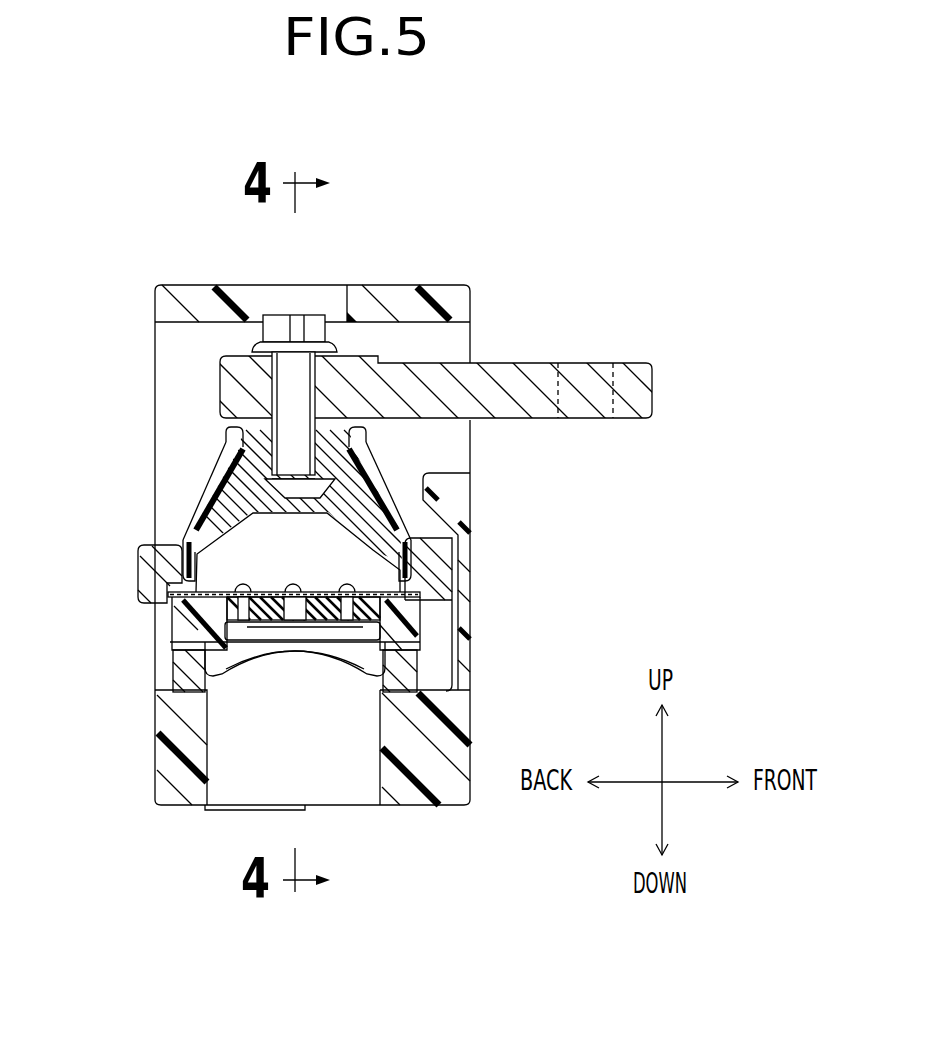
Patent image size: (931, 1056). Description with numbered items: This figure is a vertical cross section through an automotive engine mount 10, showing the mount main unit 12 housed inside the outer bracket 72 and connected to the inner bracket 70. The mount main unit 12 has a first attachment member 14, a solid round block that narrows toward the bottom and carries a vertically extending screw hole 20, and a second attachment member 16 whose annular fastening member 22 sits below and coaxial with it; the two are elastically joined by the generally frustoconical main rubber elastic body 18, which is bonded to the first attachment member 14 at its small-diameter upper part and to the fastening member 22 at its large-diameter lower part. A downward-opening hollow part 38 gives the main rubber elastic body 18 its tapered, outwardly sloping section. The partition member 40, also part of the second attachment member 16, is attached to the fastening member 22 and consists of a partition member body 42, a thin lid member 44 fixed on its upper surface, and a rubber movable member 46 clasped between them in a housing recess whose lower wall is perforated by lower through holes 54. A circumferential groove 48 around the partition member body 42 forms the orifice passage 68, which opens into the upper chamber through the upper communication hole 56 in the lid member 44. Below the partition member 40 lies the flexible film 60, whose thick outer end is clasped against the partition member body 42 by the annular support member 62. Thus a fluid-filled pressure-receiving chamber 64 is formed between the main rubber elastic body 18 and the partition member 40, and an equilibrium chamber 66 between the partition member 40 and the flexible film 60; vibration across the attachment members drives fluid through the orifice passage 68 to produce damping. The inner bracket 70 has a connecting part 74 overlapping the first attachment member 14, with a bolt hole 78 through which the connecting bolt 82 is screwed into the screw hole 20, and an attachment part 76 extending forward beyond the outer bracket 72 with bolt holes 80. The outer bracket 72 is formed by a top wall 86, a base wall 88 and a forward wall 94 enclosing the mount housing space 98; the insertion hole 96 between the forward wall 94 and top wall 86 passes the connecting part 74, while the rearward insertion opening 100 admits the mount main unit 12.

The automotive engine mount 10 is at (626, 276).
The mount main unit 12 is at (190, 485).
The first attachment member 14 is at (234, 398).
The second attachment member 16 is at (128, 547).
The main rubber elastic body 18 is at (360, 490).
The screw hole 20 is at (278, 446).
The fastening member 22 is at (160, 565).
The hollow part 38 is at (350, 540).
The partition member 40 is at (155, 617).
The partition member body 42 is at (297, 612).
The lid member 44 is at (260, 592).
The movable member 46 is at (323, 605).
The circumferential groove 48 is at (383, 613).
The lower through holes 54 is at (340, 617).
The upper communication hole 56 is at (185, 600).
The flexible film 60 is at (247, 663).
The support member 62 is at (402, 670).
The pressure-receiving chamber 64 is at (235, 578).
The equilibrium chamber 66 is at (367, 657).
The orifice passage 68 is at (395, 607).
The inner bracket 70 is at (630, 434).
The outer bracket 72 is at (177, 273).
The connecting part 74 is at (355, 385).
The attachment part 76 is at (628, 393).
The bolt hole 78 is at (274, 385).
The bolt holes 80 is at (565, 398).
The connecting bolt 82 is at (308, 332).
The top wall 86 is at (202, 300).
The base wall 88 is at (178, 758).
The forward wall 94 is at (462, 534).
The insertion hole 96 is at (470, 322).
The mount housing space 98 is at (203, 457).
The insertion opening 100 is at (148, 329).